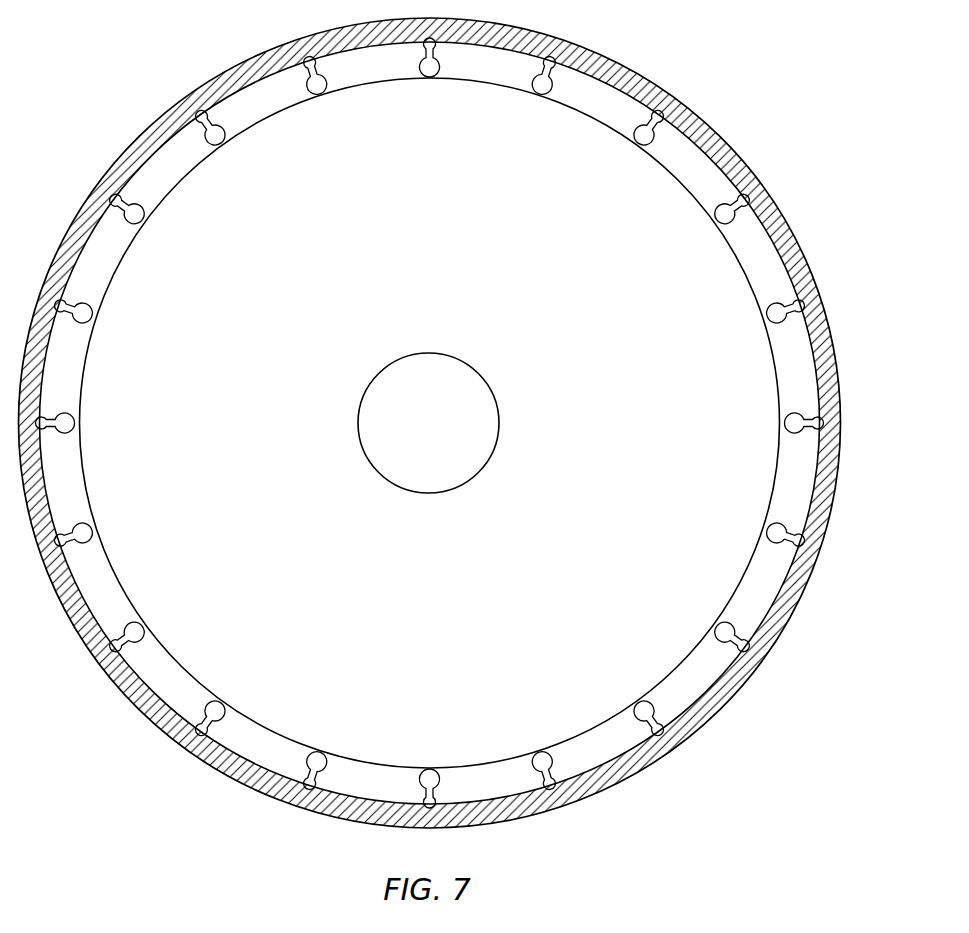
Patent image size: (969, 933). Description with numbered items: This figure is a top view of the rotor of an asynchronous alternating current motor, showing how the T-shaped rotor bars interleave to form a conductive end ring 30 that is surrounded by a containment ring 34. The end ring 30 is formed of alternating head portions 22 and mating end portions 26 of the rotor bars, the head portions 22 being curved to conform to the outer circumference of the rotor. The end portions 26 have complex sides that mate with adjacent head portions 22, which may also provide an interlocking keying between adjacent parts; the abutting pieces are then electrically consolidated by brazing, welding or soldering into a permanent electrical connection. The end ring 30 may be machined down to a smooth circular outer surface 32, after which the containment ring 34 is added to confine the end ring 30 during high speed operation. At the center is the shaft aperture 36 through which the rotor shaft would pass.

The head portion 22 is at (477, 70).
The end portion 26 is at (768, 530).
The conductive end ring 30 is at (770, 249).
The smooth circular outer surface 32 is at (809, 358).
The containment ring 34 is at (828, 468).
The shaft aperture 36 is at (489, 411).